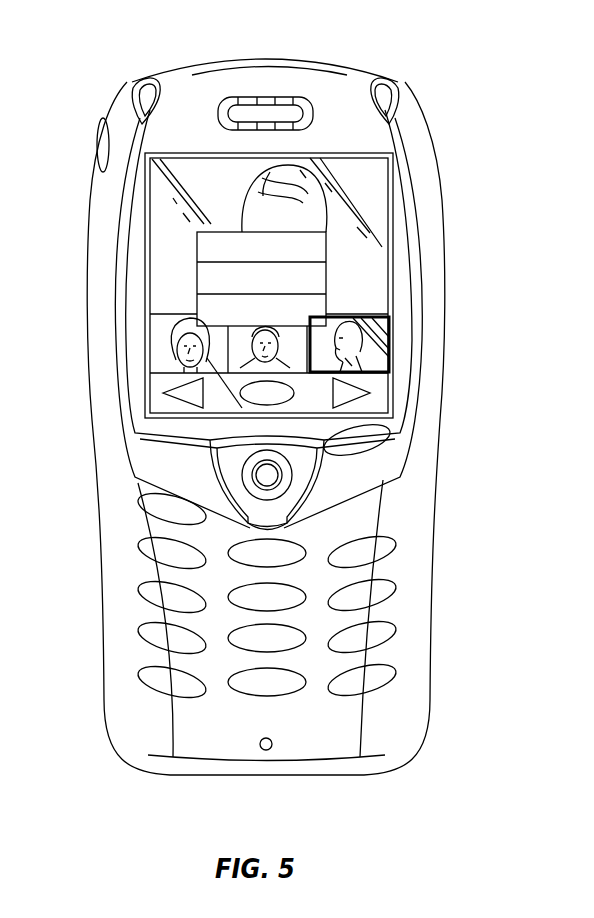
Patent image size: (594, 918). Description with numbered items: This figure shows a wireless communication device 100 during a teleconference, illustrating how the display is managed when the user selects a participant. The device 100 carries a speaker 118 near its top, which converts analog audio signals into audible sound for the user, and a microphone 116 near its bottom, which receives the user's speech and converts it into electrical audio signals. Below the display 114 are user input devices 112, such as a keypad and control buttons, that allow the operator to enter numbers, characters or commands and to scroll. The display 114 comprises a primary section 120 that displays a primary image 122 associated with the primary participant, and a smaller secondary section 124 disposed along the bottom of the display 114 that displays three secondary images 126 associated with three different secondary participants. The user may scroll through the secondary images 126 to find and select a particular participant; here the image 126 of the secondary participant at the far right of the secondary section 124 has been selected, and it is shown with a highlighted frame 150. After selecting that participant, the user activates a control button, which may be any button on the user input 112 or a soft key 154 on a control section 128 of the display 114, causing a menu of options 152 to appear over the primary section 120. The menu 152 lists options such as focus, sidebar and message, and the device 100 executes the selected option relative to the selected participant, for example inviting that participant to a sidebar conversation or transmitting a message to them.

The wireless communication device 100 is at (480, 60).
The user input devices 112 is at (133, 563).
The display 114 is at (142, 228).
The microphone 116 is at (268, 750).
The speaker 118 is at (253, 97).
The primary section 120 is at (348, 178).
The primary image 122 is at (250, 184).
The secondary section 124 is at (156, 351).
The secondary images 126 is at (170, 325).
The control section 128 is at (367, 402).
The selected thumbnail image 150 is at (327, 318).
The menu of options 152 is at (327, 277).
The soft key 154 is at (183, 392).